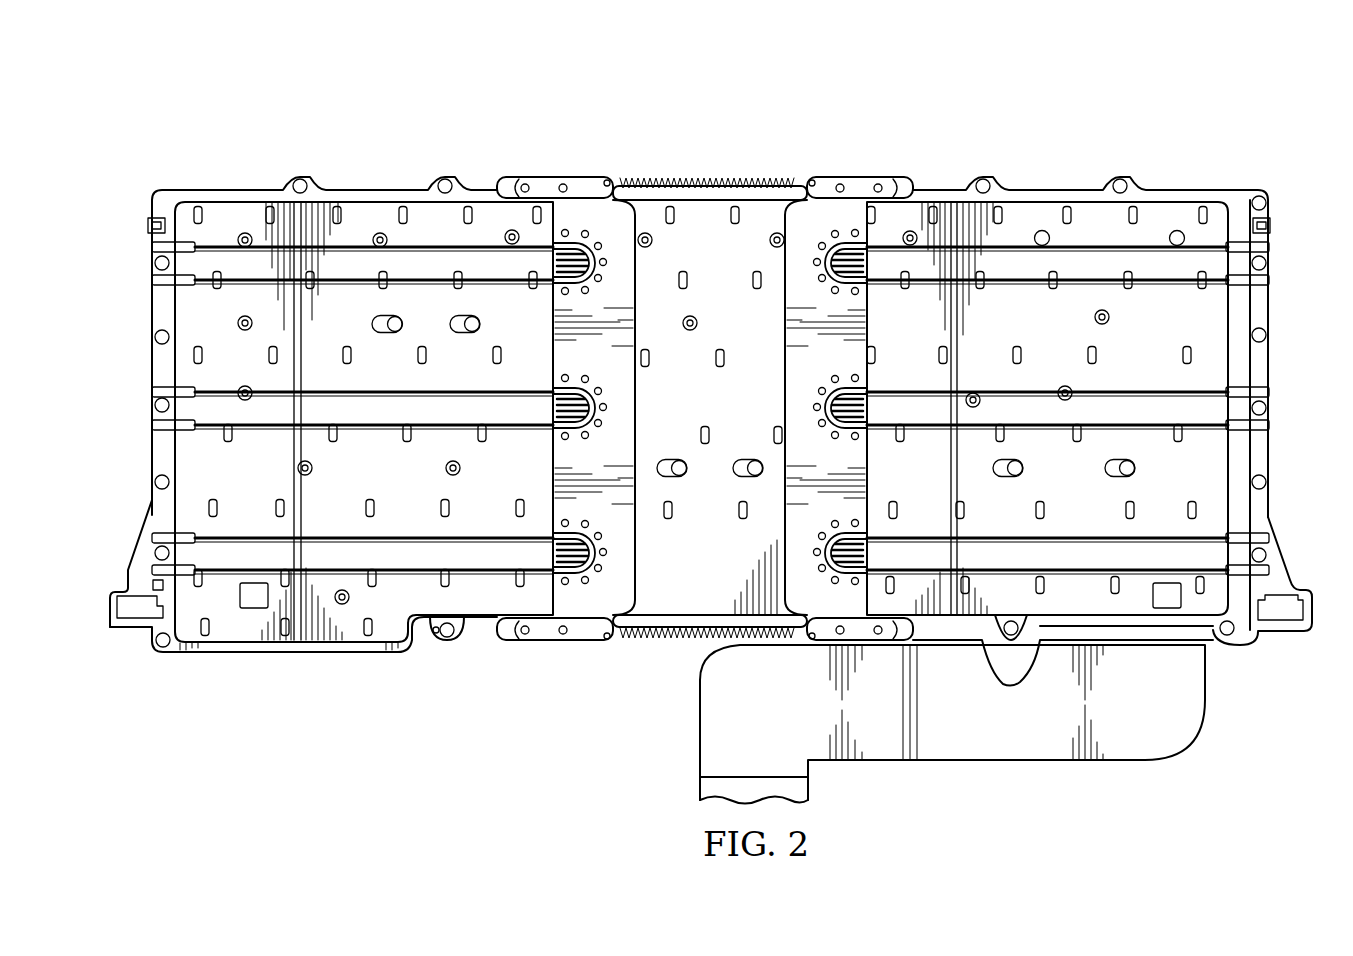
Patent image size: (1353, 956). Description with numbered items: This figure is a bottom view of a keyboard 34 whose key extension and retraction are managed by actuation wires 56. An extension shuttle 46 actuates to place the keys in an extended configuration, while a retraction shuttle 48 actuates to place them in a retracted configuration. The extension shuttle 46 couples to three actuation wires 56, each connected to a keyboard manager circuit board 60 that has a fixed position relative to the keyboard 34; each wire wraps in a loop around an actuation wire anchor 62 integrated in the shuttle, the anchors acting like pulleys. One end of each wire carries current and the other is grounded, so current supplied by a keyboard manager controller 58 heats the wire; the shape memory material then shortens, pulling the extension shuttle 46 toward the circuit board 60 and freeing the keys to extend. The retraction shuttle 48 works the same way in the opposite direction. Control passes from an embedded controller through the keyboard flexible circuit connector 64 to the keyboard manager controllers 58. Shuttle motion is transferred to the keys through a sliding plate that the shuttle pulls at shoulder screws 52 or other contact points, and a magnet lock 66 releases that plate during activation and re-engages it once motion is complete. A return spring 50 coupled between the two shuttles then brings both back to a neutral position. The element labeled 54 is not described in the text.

The keyboard 34 is at (1007, 100).
The extension shuttle 46 is at (578, 178).
The retraction shuttle 48 is at (840, 178).
The return spring 50 is at (748, 182).
The shoulder screws 52 is at (400, 316).
The slot 54 is at (383, 333).
The actuation wires 56 is at (1167, 283).
The keyboard manager controller 58 is at (1298, 627).
The keyboard manager circuit board 60 is at (1292, 578).
The actuation wire anchor 62 is at (842, 520).
The keyboard flexible circuit connector 64 is at (697, 728).
The magnet lock 66 is at (262, 600).